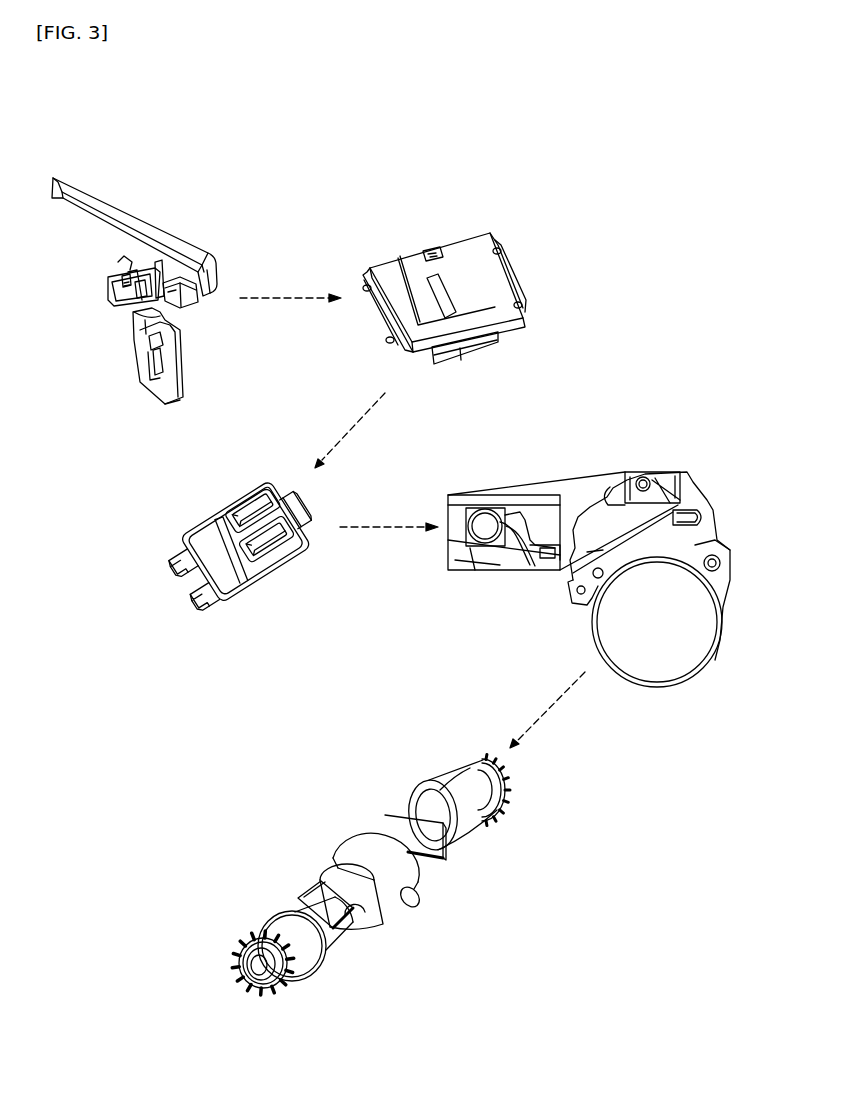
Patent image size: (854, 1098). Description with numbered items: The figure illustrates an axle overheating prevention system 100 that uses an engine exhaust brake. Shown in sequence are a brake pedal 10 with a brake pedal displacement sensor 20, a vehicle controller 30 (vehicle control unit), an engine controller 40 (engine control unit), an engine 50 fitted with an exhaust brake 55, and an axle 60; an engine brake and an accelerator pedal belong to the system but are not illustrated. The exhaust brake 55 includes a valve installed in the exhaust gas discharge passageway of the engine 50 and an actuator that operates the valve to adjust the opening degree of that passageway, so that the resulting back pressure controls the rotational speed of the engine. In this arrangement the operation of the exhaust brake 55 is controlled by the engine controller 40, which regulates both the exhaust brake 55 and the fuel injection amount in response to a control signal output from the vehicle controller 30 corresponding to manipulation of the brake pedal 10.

The axle overheating prevention system 100 is at (600, 123).
The brake pedal 10 is at (121, 220).
The brake pedal displacement sensor 20 is at (193, 292).
The vehicle controller 30 is at (488, 273).
The engine controller 40 is at (300, 493).
The engine 50 is at (665, 470).
The exhaust brake 55 is at (540, 496).
The axle 60 is at (428, 780).